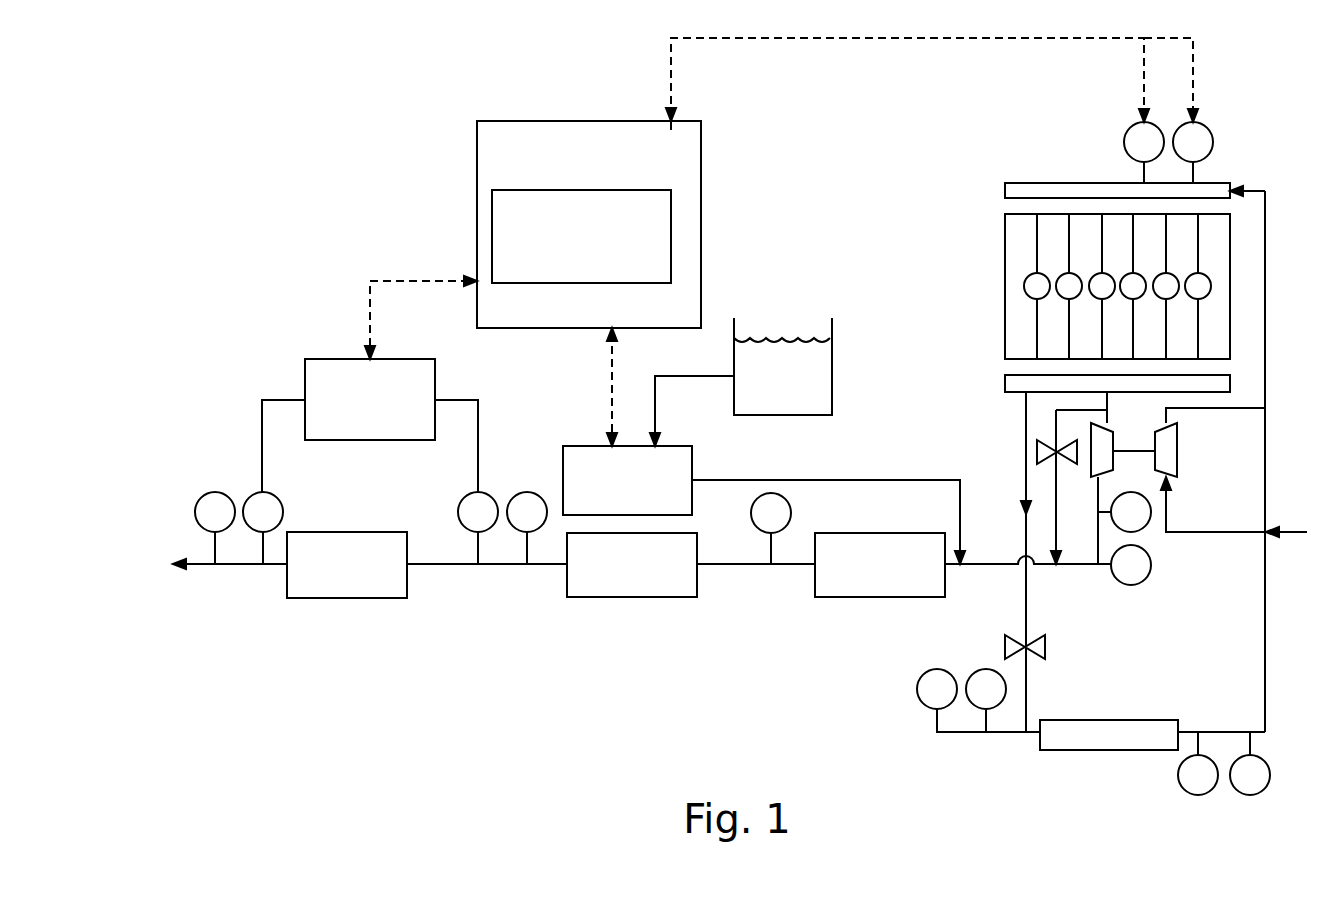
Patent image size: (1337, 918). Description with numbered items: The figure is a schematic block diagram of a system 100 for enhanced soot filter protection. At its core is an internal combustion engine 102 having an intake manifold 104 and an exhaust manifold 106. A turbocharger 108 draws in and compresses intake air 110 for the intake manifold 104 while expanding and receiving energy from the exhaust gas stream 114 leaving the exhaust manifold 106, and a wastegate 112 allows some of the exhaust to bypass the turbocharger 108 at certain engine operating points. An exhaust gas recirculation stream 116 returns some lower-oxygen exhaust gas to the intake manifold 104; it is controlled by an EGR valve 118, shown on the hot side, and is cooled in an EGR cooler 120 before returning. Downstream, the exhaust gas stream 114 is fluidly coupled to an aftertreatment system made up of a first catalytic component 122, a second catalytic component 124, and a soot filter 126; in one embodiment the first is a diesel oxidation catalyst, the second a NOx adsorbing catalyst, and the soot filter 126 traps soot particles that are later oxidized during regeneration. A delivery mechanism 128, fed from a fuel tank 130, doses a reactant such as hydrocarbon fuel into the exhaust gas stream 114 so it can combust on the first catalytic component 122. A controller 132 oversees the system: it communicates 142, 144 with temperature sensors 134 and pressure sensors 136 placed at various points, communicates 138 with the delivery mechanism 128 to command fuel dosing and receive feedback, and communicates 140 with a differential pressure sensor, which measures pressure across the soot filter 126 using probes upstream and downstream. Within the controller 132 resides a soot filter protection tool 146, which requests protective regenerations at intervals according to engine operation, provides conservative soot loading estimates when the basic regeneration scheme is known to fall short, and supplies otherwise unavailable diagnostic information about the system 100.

The system 100 is at (326, 149).
The internal combustion engine 102 is at (1230, 287).
The intake manifold 104 is at (1012, 182).
The exhaust manifold 106 is at (1143, 393).
The turbocharger 108 is at (1177, 451).
The intake air 110 is at (1295, 534).
The wastegate 112 is at (1037, 452).
The exhaust gas stream 114 is at (205, 568).
The exhaust gas recirculation (EGR) stream 116 is at (1265, 665).
The EGR valve 118 is at (1045, 647).
The EGR cooler 120 is at (1105, 750).
The first catalytic component 122 is at (946, 598).
The second catalytic component 124 is at (631, 598).
The soot filter 126 is at (346, 532).
The delivery mechanism 128 is at (584, 446).
The fuel tank 130 is at (832, 377).
The controller 132 is at (344, 359).
The temperature sensor 134 is at (1124, 142).
The pressure sensor 136 is at (1213, 142).
The communication 138 is at (607, 356).
The communication 140 is at (428, 280).
The communication 142 is at (1140, 64).
The communication 144 is at (1197, 60).
The soot filter protection tool 146 is at (581, 236).